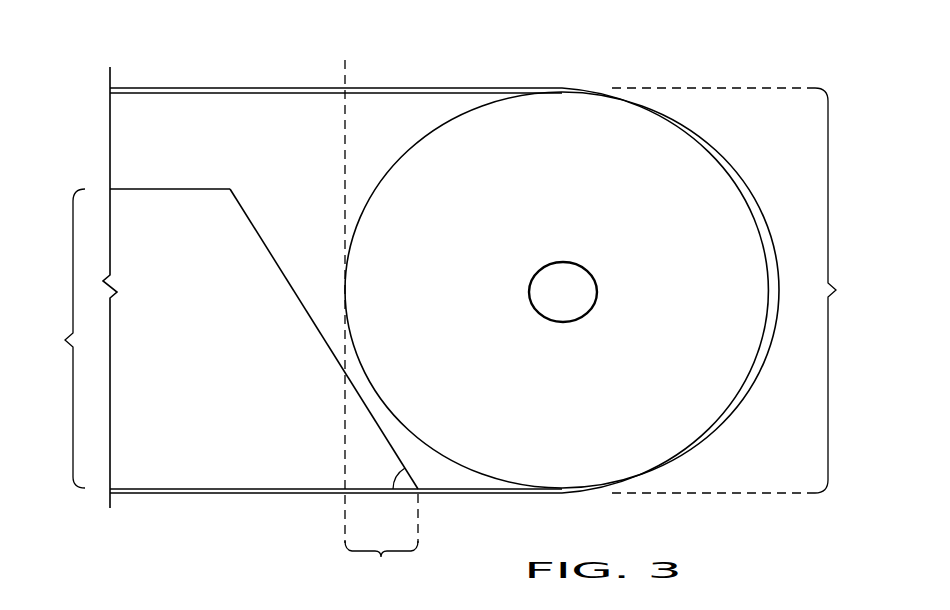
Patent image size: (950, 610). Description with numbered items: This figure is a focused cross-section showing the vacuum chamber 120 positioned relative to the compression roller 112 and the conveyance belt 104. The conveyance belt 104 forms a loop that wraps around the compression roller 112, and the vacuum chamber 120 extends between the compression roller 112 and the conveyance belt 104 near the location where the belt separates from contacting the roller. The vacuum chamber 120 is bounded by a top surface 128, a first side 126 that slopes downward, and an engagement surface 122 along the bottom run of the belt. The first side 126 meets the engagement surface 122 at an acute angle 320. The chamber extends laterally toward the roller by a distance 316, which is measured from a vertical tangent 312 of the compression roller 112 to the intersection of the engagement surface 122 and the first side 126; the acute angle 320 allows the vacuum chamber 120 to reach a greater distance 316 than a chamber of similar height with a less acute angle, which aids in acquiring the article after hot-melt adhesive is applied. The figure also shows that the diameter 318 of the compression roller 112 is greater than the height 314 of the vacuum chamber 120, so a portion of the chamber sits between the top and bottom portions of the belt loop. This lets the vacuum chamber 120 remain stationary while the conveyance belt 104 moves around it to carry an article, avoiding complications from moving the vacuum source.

The conveyance belt 104 is at (227, 84).
The compression roller 112 is at (567, 128).
The vacuum chamber 120 is at (150, 471).
The engagement surface 122 is at (240, 484).
The first side 126 is at (283, 271).
The top surface 128 is at (170, 189).
The vertical tangent 312 is at (345, 76).
The height 314 is at (50, 338).
The distance 316 is at (381, 540).
The diameter 318 is at (747, 290).
The acute angle 320 is at (396, 472).